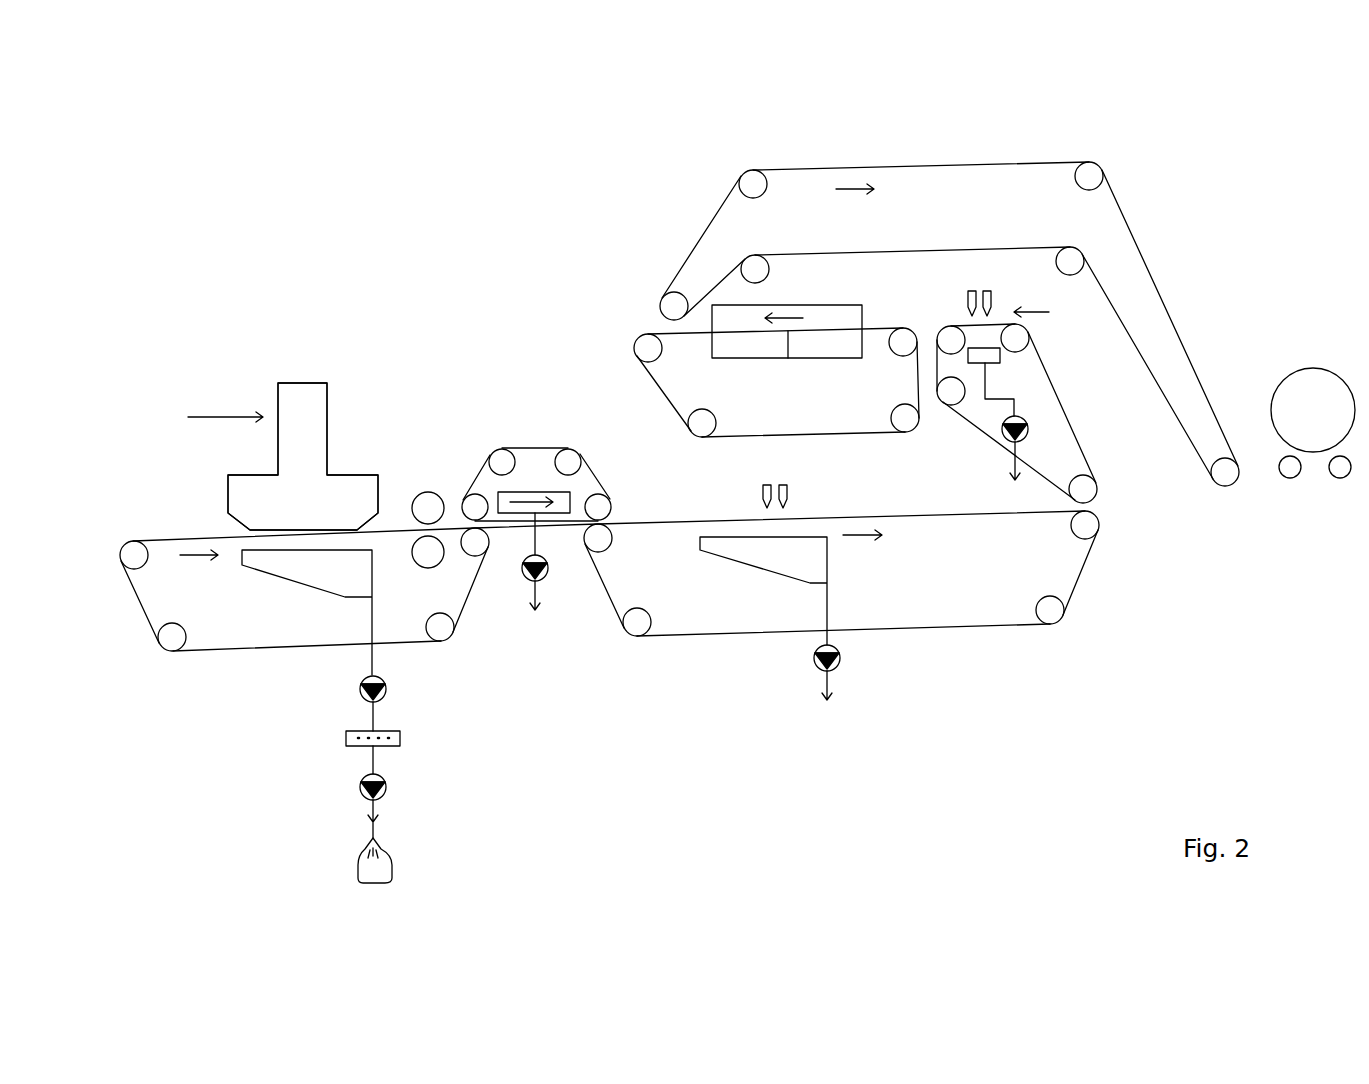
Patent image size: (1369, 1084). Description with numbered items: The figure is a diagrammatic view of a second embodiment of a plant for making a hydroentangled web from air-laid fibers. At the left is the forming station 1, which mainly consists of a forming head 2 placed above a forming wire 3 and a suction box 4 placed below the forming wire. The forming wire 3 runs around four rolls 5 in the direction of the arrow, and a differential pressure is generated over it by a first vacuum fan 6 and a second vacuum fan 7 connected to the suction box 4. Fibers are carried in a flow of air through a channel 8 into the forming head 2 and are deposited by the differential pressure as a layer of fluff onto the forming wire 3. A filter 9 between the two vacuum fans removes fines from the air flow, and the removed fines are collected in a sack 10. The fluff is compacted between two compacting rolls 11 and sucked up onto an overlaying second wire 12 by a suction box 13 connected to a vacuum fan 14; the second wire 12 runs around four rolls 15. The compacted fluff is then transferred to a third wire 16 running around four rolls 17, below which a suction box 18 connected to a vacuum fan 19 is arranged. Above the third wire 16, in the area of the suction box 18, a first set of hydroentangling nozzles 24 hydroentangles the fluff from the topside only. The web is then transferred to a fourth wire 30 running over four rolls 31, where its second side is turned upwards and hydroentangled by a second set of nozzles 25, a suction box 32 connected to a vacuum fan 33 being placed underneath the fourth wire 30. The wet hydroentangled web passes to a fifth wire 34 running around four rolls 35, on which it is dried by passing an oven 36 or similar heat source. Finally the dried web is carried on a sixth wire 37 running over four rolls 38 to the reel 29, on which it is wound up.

The forming station 1 is at (289, 372).
The forming head 2 is at (327, 397).
The forming wire 3 is at (177, 538).
The suction box 4 is at (283, 587).
The rolls 5 is at (120, 549).
The first vacuum fan 6 is at (358, 691).
The second vacuum fan 7 is at (358, 791).
The channel 8 is at (208, 416).
The filter 9 is at (346, 740).
The sack 10 is at (358, 878).
The compacting rolls 11 is at (417, 494).
The second wire 12 is at (518, 443).
The suction box 13 is at (540, 490).
The vacuum fan 14 is at (520, 577).
The rolls 15 is at (611, 503).
The third wire 16 is at (915, 512).
The rolls 17 is at (1068, 620).
The suction box 18 is at (743, 568).
The vacuum fan 19 is at (843, 660).
The first set of hydroentangling nozzles 24 is at (770, 478).
The second set of hydroentangling nozzles 25 is at (978, 284).
The reel 29 is at (1308, 360).
The fourth wire 30 is at (1070, 421).
The rolls 31 is at (1102, 489).
The suction box 32 is at (1000, 369).
The vacuum fan 33 is at (1002, 429).
The fifth wire 34 is at (791, 340).
The rolls 35 is at (706, 412).
The oven 36 is at (821, 306).
The sixth wire 37 is at (934, 161).
The rolls 38 is at (749, 169).